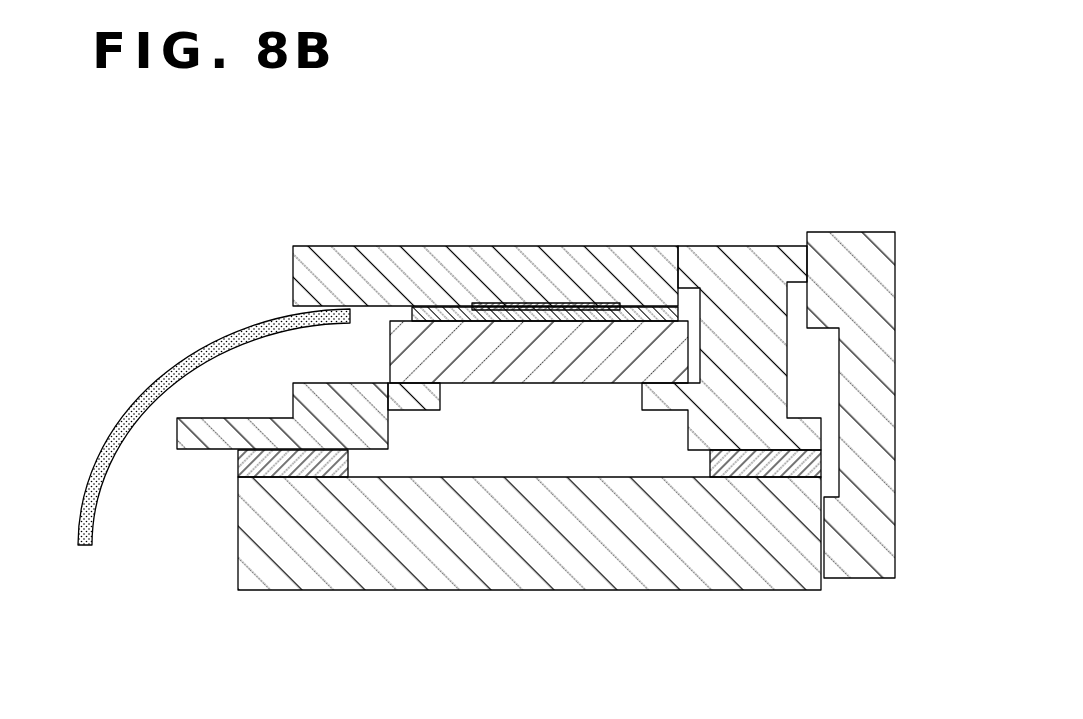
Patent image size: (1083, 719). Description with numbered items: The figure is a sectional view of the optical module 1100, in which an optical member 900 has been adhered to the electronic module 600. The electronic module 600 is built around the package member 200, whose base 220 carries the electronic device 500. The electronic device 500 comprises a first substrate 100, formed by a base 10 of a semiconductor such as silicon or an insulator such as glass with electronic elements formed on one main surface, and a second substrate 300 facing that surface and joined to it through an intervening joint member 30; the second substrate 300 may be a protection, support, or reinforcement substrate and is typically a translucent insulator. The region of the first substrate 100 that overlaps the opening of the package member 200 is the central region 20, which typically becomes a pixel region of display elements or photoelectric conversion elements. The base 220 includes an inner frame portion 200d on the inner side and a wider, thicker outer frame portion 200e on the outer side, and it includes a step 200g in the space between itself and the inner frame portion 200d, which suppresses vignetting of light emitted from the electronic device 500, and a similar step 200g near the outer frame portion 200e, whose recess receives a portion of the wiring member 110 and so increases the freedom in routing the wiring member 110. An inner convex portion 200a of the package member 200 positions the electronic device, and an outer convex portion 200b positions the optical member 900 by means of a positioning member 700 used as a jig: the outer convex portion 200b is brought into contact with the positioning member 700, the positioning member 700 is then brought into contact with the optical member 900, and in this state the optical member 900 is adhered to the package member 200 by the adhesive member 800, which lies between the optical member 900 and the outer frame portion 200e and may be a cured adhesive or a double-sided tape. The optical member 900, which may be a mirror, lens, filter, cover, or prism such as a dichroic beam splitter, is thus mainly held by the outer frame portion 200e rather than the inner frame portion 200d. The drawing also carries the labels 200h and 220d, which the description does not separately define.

The base 10 is at (519, 303).
The central region 20 is at (582, 303).
The joint member 30 is at (452, 310).
The first substrate 100 is at (612, 203).
The wiring member 110 is at (231, 324).
The package member 200 is at (760, 246).
The inner convex portion 200a is at (686, 267).
The outer convex portion 200b is at (797, 263).
The inner frame portion 200d is at (657, 395).
The outer frame portion 200e is at (263, 434).
The step 200g is at (688, 430).
The step surface of frame 200h is at (290, 404).
The base 220 is at (343, 410).
The cover member end portion 220d is at (417, 397).
The second substrate 300 is at (648, 355).
The electronic device 500 is at (677, 153).
The electronic module 600 is at (790, 103).
The positioning member 700 is at (862, 545).
The adhesive member 800 is at (295, 465).
The optical member 900 is at (470, 540).
The optical module 1100 is at (823, 633).